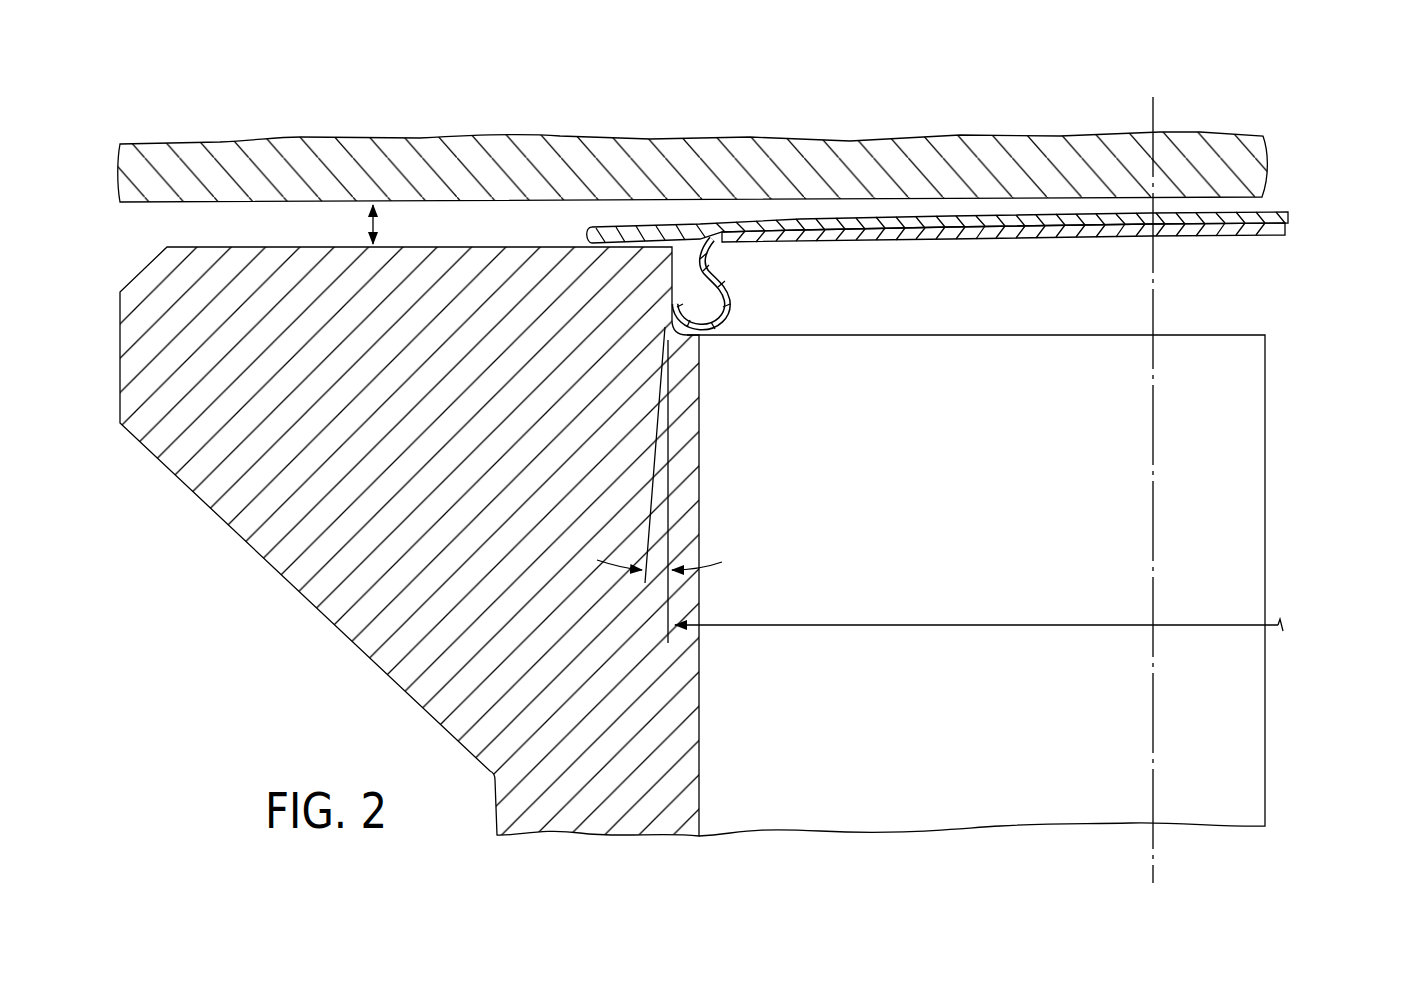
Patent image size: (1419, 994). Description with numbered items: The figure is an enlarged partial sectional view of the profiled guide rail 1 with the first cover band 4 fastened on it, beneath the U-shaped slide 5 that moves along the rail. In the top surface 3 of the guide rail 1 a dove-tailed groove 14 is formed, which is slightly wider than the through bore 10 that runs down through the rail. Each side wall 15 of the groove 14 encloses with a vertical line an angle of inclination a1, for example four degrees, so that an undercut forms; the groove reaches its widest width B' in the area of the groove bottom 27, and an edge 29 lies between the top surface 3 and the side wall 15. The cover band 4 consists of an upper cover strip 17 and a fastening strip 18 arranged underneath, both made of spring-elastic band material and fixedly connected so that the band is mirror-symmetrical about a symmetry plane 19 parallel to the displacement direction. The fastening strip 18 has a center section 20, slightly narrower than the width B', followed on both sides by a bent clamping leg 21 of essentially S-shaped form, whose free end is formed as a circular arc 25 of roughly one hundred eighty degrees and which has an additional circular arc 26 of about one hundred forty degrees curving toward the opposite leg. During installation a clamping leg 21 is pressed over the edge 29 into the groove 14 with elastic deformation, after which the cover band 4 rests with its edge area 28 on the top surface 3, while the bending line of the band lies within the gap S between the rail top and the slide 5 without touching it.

The guide rail 1 is at (288, 596).
The top surface 3 is at (478, 246).
The cover band 4 is at (971, 205).
The slide 5 is at (212, 136).
The through bore 10 is at (779, 794).
The groove 14 is at (1238, 290).
The side wall 15 is at (701, 257).
The cover strip 17 is at (826, 216).
The fastening strip 18 is at (863, 249).
The symmetry plane 19 is at (1155, 112).
The center section 20 is at (940, 250).
The clamping leg 21 is at (742, 302).
The circular arc 25 is at (706, 336).
The additional circular arc 26 is at (714, 260).
The groove bottom 27 is at (1061, 333).
The edge area 28 is at (607, 221).
The edge 29 is at (681, 250).
The gap S is at (370, 225).
The width of the groove B' is at (979, 596).
The angle of inclination a1 is at (648, 573).